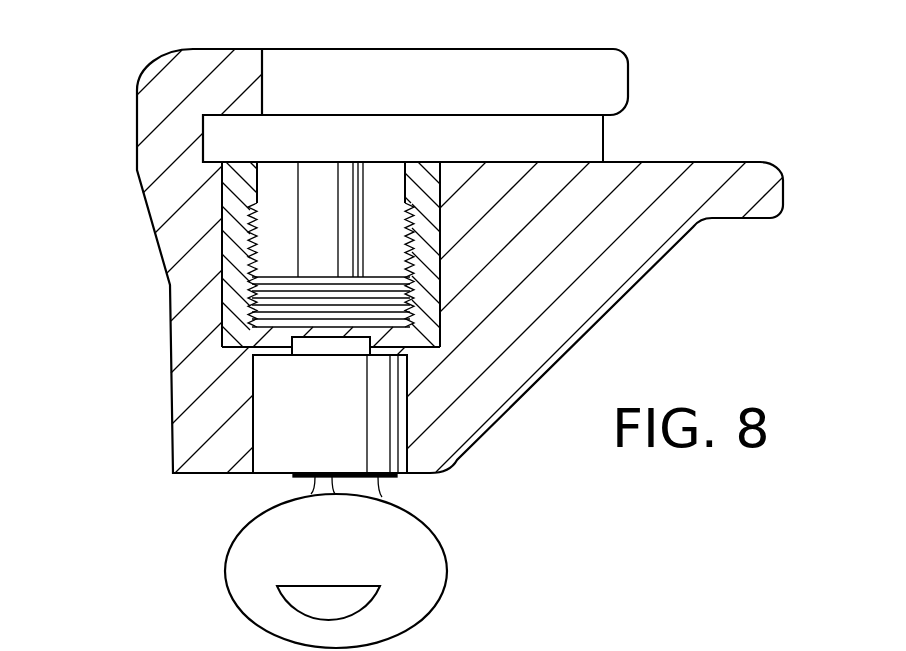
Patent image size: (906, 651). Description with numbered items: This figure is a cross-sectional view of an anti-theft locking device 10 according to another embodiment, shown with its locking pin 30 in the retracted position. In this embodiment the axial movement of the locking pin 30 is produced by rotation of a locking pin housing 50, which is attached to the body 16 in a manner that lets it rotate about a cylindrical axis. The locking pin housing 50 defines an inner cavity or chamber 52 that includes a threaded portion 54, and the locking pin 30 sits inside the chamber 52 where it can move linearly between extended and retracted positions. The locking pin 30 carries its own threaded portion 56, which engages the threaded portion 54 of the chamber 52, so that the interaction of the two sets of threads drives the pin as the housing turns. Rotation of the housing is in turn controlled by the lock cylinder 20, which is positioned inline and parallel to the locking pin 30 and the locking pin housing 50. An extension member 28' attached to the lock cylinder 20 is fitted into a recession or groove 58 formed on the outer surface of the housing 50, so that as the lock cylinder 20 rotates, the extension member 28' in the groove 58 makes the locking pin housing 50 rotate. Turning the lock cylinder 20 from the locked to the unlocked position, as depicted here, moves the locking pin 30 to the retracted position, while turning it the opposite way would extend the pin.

The locking device 10 is at (128, 62).
The body 16 is at (755, 180).
The lock cylinder 20 is at (278, 453).
The extension member 28' is at (231, 368).
The locking pin 30 is at (330, 180).
The locking pin housing 50 is at (420, 188).
The chamber 52 is at (268, 182).
The threaded portion 54 is at (243, 245).
The threaded portion 56 is at (250, 305).
The groove 58 is at (415, 348).